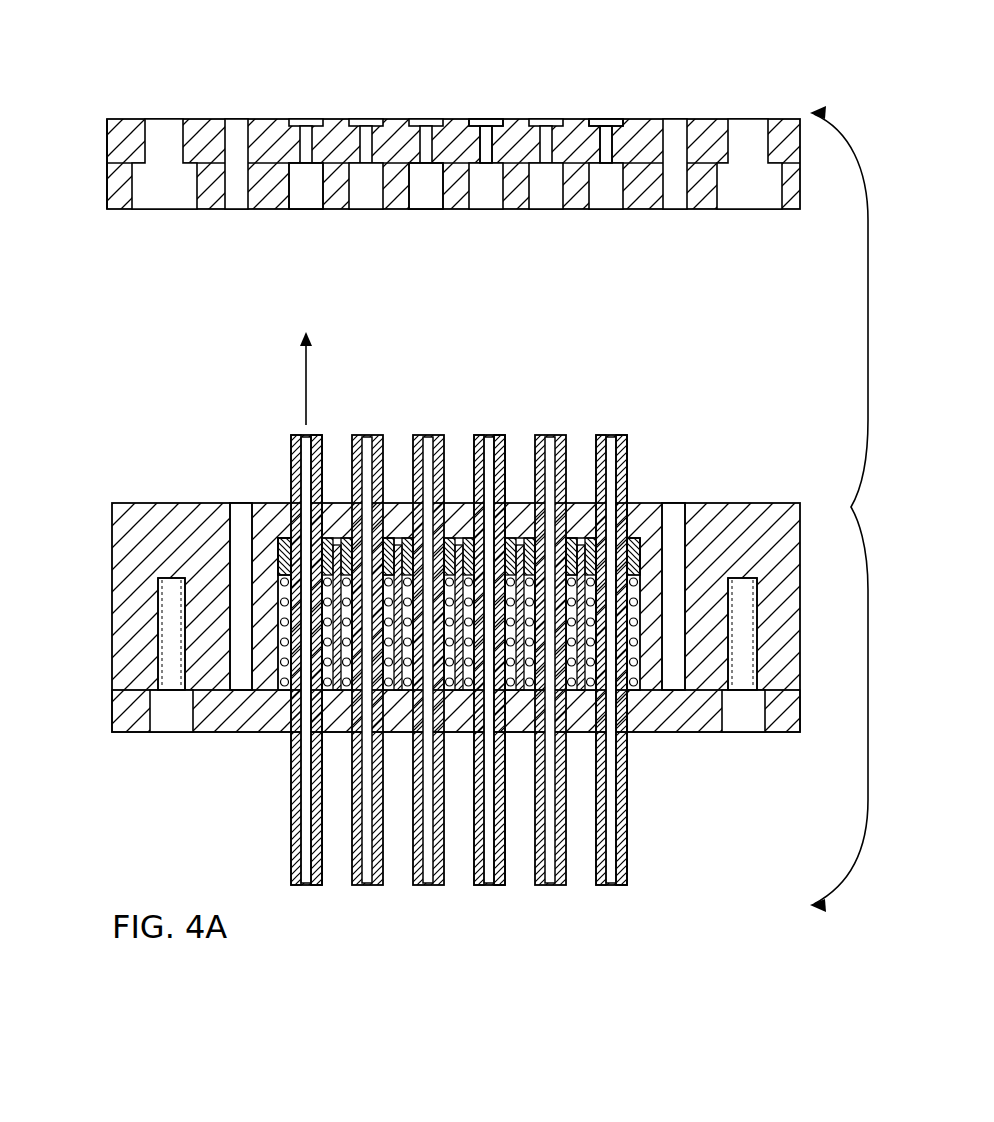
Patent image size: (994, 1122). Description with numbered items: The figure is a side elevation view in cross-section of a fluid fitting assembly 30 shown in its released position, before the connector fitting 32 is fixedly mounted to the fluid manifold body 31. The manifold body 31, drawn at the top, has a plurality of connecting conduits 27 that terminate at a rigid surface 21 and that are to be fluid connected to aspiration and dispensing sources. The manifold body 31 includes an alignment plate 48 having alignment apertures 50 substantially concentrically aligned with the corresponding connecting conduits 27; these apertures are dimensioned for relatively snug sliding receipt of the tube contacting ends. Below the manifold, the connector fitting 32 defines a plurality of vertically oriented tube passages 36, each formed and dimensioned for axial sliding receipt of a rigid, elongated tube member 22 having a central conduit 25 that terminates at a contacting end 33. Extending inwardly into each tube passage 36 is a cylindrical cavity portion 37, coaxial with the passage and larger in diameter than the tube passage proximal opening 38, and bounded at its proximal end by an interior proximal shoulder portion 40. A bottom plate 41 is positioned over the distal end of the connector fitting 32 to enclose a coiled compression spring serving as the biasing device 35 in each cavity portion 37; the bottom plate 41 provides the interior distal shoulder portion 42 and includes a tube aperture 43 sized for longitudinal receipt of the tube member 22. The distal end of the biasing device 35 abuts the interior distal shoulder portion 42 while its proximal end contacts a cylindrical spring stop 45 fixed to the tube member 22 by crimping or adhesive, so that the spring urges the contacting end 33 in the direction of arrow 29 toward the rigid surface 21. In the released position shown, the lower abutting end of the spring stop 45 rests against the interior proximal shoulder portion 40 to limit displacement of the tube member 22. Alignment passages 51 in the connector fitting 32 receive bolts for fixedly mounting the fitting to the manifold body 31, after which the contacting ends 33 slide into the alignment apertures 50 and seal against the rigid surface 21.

The rigid surface 21 is at (488, 165).
The tube member 22 is at (506, 447).
The central conduit 25 is at (427, 882).
The connecting conduit 27 is at (485, 119).
The arrow 29 is at (305, 358).
The fluid fitting assembly 30 is at (851, 509).
The fluid manifold body 31 is at (712, 114).
The connector fitting 32 is at (102, 640).
The contacting end 33 is at (477, 435).
The biasing device 35 is at (268, 618).
The tube passage 36 is at (322, 462).
The cavity portion 37 is at (230, 542).
The tube passage proximal opening 38 is at (278, 537).
The interior proximal shoulder portion 40 is at (281, 553).
The bottom plate 41 is at (108, 710).
The interior distal shoulder portion 42 is at (330, 730).
The tube aperture 43 is at (293, 738).
The spring stop 45 is at (573, 540).
The alignment plate 48 is at (107, 188).
The alignment aperture 50 is at (318, 190).
The alignment passage 51 is at (283, 565).